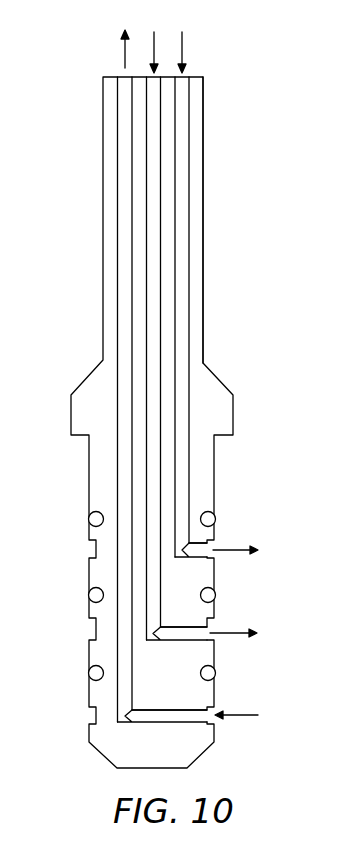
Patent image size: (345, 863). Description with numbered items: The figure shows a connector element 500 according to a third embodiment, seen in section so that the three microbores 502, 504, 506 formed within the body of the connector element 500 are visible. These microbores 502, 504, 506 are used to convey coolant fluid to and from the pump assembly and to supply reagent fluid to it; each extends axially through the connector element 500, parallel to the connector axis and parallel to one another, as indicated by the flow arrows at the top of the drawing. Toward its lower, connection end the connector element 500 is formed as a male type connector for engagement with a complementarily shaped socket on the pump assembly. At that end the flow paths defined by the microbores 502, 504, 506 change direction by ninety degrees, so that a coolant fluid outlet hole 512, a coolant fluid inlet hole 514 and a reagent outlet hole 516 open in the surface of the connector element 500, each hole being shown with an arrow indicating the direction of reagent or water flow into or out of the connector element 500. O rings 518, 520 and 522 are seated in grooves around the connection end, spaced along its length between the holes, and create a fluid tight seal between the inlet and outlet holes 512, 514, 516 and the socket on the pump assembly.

The connector element 500 is at (85, 80).
The microbore 502 is at (183, 88).
The microbore 504 is at (155, 122).
The microbore 506 is at (125, 105).
The coolant fluid outlet hole 512 is at (212, 640).
The coolant fluid inlet hole 514 is at (213, 718).
The reagent outlet hole 516 is at (213, 557).
The O ring 518 is at (88, 519).
The O ring 520 is at (88, 595).
The O ring 522 is at (88, 673).